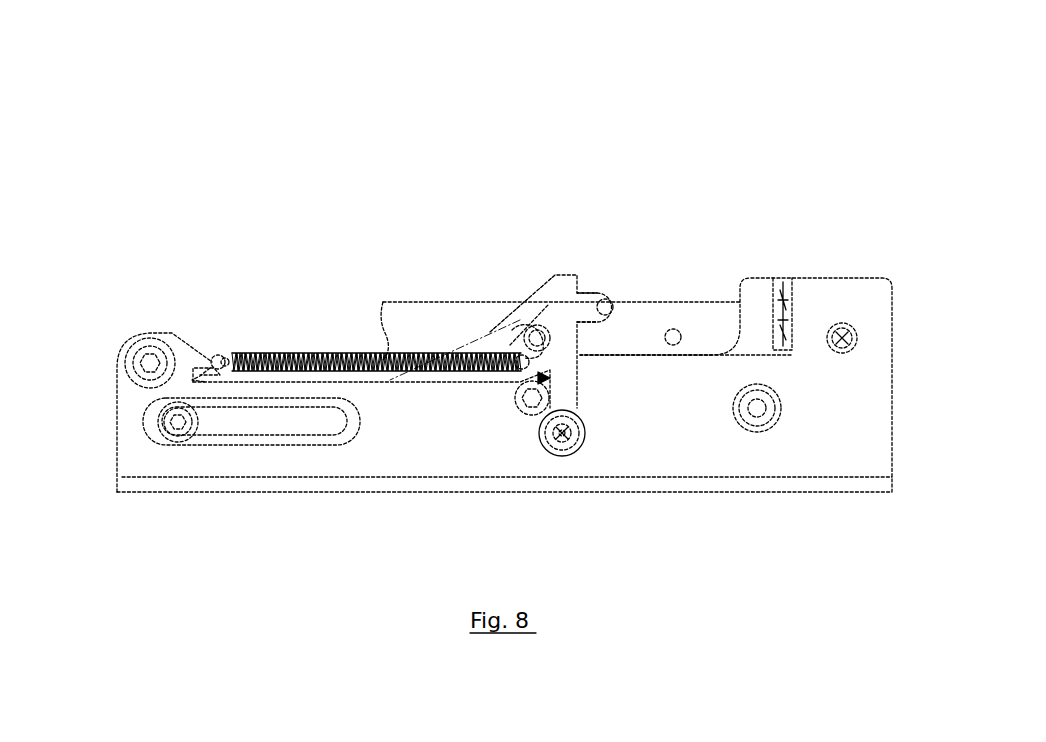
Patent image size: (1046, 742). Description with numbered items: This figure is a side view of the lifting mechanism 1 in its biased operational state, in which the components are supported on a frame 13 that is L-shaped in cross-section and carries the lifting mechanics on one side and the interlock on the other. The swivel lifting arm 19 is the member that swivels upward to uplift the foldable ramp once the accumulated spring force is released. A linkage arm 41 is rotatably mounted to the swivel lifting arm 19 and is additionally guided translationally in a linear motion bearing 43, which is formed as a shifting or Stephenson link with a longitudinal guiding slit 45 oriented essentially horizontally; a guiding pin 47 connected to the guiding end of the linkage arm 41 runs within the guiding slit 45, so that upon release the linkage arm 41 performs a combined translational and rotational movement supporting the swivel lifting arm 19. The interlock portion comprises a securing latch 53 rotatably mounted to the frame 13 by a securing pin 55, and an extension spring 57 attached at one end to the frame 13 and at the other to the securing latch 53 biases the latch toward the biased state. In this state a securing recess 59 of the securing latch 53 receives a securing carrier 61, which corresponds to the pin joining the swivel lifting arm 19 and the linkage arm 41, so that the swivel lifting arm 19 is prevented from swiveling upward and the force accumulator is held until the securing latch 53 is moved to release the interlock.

The lifting mechanism 1 is at (676, 112).
The frame 13 is at (112, 458).
The swivel lifting arm 19 is at (439, 322).
The linkage arm 41 is at (487, 343).
The linear motion bearing 43 is at (172, 462).
The guiding slit 45 is at (262, 432).
The guiding pin 47 is at (178, 420).
The securing latch 53 is at (567, 308).
The securing pin 55 is at (548, 444).
The extension spring 57 is at (356, 386).
The securing recess 59 is at (520, 337).
The securing carrier 61 is at (540, 340).